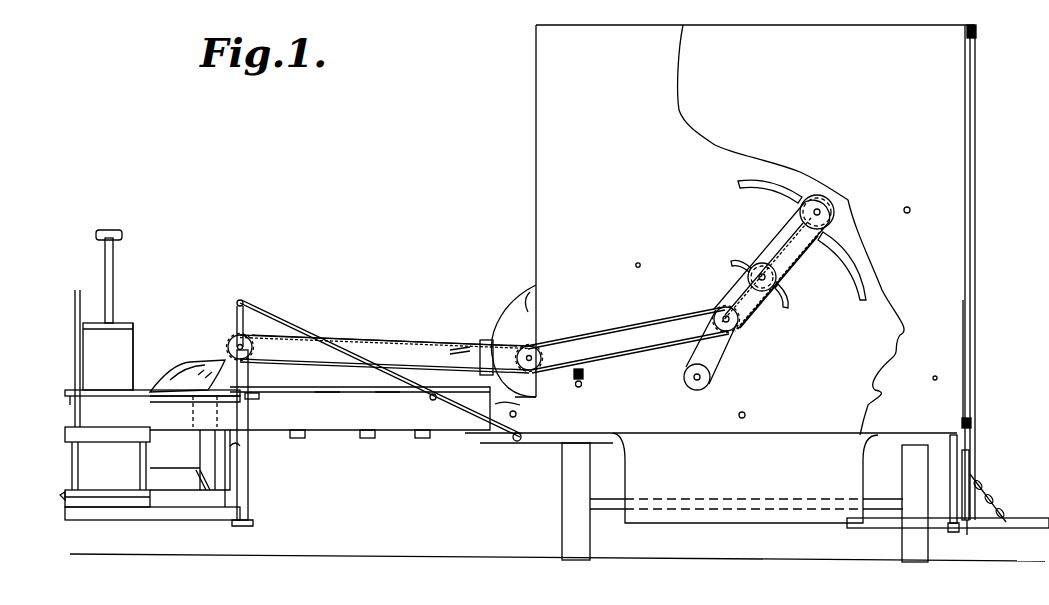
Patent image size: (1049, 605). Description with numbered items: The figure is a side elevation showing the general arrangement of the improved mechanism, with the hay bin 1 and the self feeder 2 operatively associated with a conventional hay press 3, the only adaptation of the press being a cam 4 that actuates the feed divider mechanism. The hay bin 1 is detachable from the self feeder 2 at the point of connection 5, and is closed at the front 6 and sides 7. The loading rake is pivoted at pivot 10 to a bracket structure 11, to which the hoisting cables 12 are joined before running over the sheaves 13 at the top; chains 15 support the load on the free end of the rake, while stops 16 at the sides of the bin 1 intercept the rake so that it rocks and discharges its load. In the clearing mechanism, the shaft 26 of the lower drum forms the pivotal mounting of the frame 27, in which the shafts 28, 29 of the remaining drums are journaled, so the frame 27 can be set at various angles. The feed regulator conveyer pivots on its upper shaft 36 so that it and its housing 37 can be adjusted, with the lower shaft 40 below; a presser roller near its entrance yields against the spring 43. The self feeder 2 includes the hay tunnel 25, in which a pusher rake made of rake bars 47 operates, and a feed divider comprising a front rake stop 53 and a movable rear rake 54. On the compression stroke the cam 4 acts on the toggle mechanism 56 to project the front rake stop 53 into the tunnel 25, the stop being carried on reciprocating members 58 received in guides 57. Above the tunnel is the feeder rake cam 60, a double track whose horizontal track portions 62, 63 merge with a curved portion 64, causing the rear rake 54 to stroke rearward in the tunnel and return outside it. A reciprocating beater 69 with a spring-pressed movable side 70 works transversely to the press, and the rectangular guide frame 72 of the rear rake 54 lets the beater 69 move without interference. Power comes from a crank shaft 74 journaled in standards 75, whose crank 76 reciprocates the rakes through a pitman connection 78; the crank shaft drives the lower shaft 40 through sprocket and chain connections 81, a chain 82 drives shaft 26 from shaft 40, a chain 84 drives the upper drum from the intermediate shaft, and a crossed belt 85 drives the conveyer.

The hay bin 1 is at (699, 42).
The self feeder 2 is at (400, 345).
The hay press 3 is at (150, 405).
The cam 4 is at (190, 460).
The point of connection 5 is at (516, 416).
The front 6 is at (972, 138).
The sides 7 is at (791, 230).
The pivot 10 is at (967, 527).
The bracket structure 11 is at (970, 470).
The hoisting cables 12 is at (972, 366).
The sheaves 13 is at (978, 30).
The chains 15 is at (990, 498).
The stops 16 is at (908, 207).
The hay tunnel 25 is at (410, 430).
The shaft of the lower drum 26 is at (740, 330).
The frame 27 is at (770, 250).
The shaft 28 is at (740, 277).
The shaft 29 is at (820, 212).
The upper shaft 36 is at (639, 262).
The housing 37 is at (540, 292).
The lower shaft 40 is at (536, 352).
The spring 43 is at (586, 384).
The rake bar 47 is at (350, 395).
The front rake stop 53 is at (248, 406).
The movable rear rake 54 is at (195, 398).
The toggle mechanism 56 is at (205, 488).
The guides 57 is at (235, 490).
The reciprocating members 58 is at (230, 448).
The feeder rake cam 60 is at (180, 372).
The horizontal track portion 62 is at (165, 395).
The horizontal track portion 63 is at (190, 358).
The curved portion 64 is at (135, 378).
The reciprocating beater 69 is at (116, 342).
The movable side 70 is at (133, 350).
The rectangular guide frame 72 is at (78, 392).
The crank shaft 74 is at (250, 366).
The standards 75 is at (250, 514).
The crank 76 is at (236, 315).
The pitman connection 78 is at (316, 342).
The sprocket and chain connections 81 is at (268, 340).
The chain 82 is at (615, 328).
The chain 84 is at (793, 266).
The crossed belt 85 is at (712, 377).